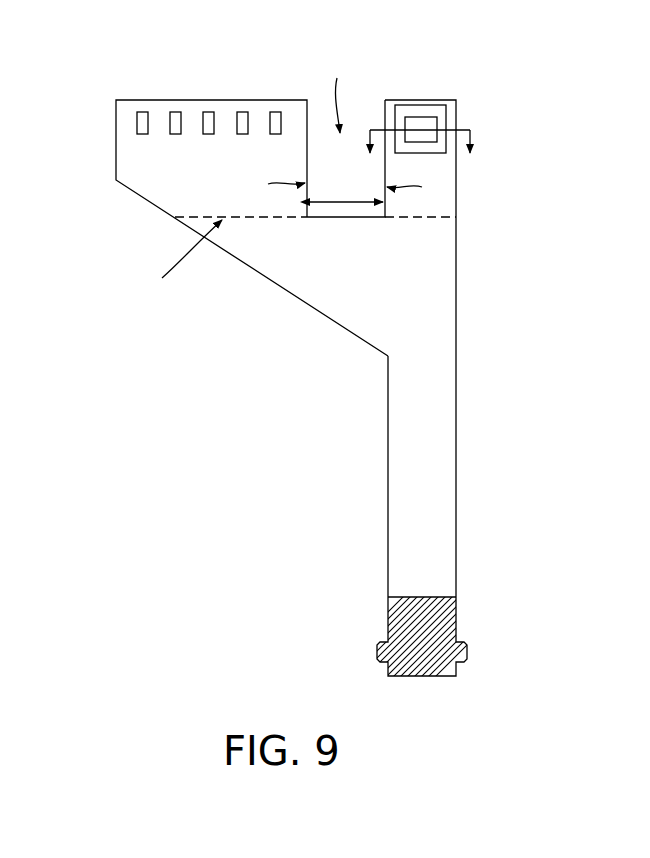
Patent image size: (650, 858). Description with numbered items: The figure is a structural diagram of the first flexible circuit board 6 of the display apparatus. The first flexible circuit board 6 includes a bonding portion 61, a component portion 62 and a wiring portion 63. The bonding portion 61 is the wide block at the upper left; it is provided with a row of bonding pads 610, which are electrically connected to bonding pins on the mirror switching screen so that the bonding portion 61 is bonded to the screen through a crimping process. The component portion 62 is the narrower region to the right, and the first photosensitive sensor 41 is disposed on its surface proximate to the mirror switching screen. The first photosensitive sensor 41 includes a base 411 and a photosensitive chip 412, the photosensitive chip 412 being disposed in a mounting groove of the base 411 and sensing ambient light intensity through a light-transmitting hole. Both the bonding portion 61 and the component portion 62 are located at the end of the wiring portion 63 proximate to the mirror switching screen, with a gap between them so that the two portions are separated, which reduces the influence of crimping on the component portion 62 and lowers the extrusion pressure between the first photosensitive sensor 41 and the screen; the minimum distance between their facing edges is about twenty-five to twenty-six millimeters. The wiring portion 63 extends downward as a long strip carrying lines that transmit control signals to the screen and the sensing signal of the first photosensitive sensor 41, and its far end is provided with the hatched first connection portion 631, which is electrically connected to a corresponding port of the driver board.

The first flexible circuit board 6 is at (61, 61).
The bonding portion 61 is at (148, 165).
The bonding pads 610 is at (207, 122).
The component portion 62 is at (455, 206).
The wiring portion 63 is at (426, 404).
The first connection portion 631 is at (420, 632).
The first photosensitive sensor 41 is at (448, 80).
The base 411 is at (440, 142).
The photosensitive chip 412 is at (410, 105).